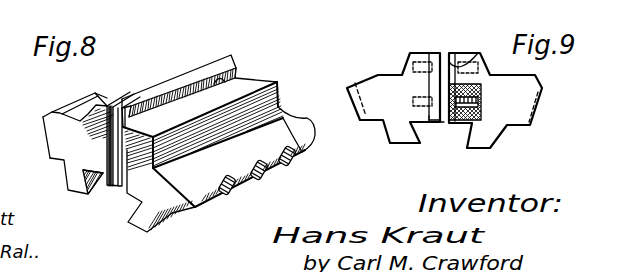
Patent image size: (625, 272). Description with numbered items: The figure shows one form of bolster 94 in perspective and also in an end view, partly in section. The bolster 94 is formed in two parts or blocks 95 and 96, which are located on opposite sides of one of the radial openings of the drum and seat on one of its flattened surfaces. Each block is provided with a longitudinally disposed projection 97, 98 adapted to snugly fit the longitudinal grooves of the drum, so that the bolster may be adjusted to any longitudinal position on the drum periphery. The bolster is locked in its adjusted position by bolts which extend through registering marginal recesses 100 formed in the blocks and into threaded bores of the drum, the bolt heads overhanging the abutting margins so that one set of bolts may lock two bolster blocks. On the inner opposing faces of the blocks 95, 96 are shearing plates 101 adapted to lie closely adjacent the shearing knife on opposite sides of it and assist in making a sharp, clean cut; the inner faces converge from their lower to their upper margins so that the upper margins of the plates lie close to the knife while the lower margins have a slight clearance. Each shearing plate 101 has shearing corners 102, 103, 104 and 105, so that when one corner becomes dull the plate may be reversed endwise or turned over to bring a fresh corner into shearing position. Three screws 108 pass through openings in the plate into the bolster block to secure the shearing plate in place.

In FIG. 8, the bolster 94 is at (154, 103).
In FIG. 9, the bolster 94 is at (384, 138).
In FIG. 8, the bolster block 95 is at (223, 64).
In FIG. 9, the bolster block 95 is at (396, 77).
In FIG. 8, the bolster block 96 is at (277, 82).
In FIG. 9, the bolster block 96 is at (533, 78).
In FIG. 8, the longitudinally disposed projection 97 is at (82, 195).
In FIG. 9, the longitudinally disposed projection 97 is at (402, 141).
In FIG. 8, the longitudinally disposed projection 98 is at (140, 218).
In FIG. 9, the longitudinally disposed projection 98 is at (494, 150).
In FIG. 8, the marginal recess 100 is at (312, 128).
In FIG. 9, the marginal recess 100 is at (540, 106).
In FIG. 8, the shearing plate 101 is at (221, 58).
In FIG. 9, the shearing plate 101 is at (452, 54).
In FIG. 8, the shearing corner 102 is at (151, 112).
In FIG. 9, the shearing corner 102 is at (470, 57).
In FIG. 8, the shearing corner 103 is at (132, 106).
In FIG. 9, the shearing corner 103 is at (434, 52).
In FIG. 9, the shearing corner 104 is at (428, 125).
In FIG. 9, the shearing corner 105 is at (441, 124).
In FIG. 8, the screw 108 is at (93, 96).
In FIG. 9, the screw 108 is at (478, 110).